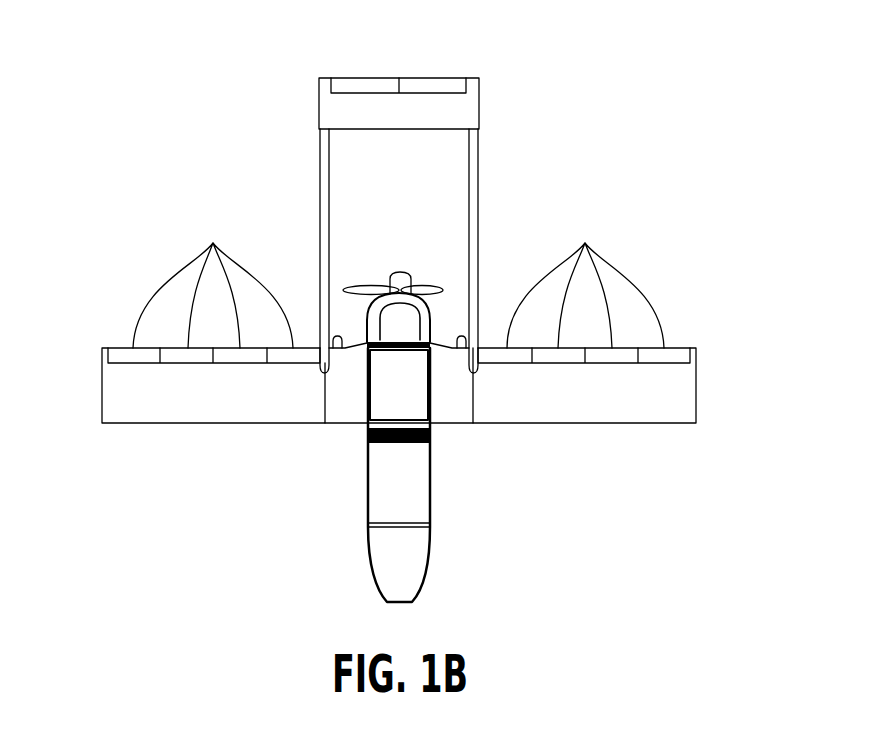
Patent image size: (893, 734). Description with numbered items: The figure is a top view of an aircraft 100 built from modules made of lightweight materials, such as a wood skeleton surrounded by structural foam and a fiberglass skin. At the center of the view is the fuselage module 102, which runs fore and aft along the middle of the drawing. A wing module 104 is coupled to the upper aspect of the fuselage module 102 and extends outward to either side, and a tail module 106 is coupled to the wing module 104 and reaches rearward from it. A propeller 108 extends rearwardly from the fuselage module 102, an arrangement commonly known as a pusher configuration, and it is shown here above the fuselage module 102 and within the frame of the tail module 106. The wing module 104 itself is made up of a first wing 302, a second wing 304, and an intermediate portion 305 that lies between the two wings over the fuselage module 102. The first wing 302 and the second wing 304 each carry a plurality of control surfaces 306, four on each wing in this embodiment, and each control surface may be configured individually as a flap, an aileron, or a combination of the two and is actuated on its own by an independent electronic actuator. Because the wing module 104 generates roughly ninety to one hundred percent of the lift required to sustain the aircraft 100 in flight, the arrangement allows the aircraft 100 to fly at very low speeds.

The aircraft 100 is at (637, 73).
The fuselage module 102 is at (440, 447).
The wing module 104 is at (439, 411).
The tail module 106 is at (478, 147).
The propeller 108 is at (370, 283).
The first wing 302 is at (595, 415).
The second wing 304 is at (218, 415).
The intermediate portion 305 is at (405, 397).
The control surfaces 306 is at (213, 248).